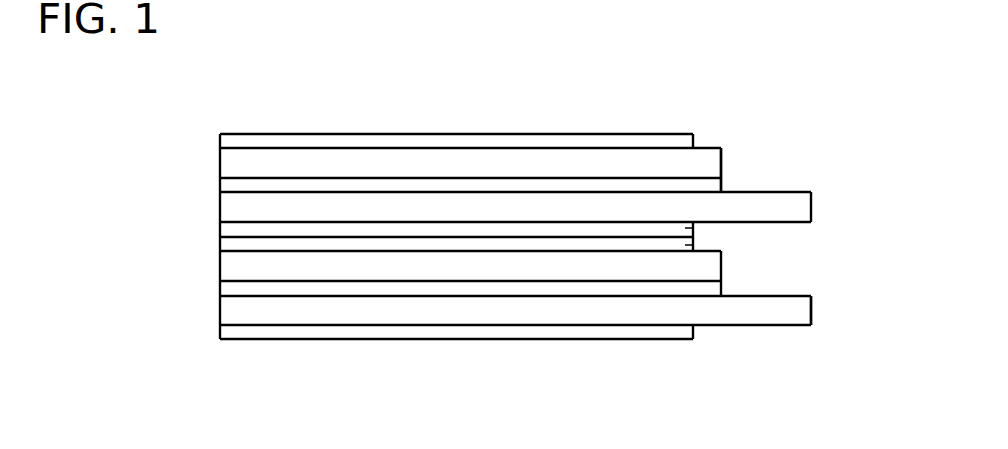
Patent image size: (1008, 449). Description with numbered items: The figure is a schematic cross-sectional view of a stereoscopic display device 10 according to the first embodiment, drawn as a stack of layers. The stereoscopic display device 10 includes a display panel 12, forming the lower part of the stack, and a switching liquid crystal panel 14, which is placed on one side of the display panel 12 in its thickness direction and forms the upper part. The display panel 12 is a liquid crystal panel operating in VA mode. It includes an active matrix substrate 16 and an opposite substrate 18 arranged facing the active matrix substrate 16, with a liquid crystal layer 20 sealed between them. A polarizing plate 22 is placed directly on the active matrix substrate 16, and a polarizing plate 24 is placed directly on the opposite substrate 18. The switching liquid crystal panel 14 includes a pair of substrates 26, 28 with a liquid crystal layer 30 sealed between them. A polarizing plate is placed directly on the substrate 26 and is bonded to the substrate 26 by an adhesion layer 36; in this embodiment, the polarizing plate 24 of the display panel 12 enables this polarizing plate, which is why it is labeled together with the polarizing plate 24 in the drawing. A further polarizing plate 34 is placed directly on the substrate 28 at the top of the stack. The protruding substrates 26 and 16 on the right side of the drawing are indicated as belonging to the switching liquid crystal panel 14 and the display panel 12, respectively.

The stereoscopic display device 10 is at (216, 130).
The display panel 12 is at (813, 330).
The switching liquid crystal panel 14 is at (723, 137).
The active matrix substrate 16 is at (238, 314).
The opposite substrate 18 is at (238, 264).
The liquid crystal layer 20 is at (238, 287).
The polarizing plate 22 is at (555, 332).
The polarizing plate 24 is at (698, 252).
The substrate 26 is at (236, 211).
The substrate 28 is at (236, 161).
The liquid crystal layer 30 is at (236, 186).
The polarizing plate 34 is at (532, 142).
The adhesion layer 36 is at (694, 233).